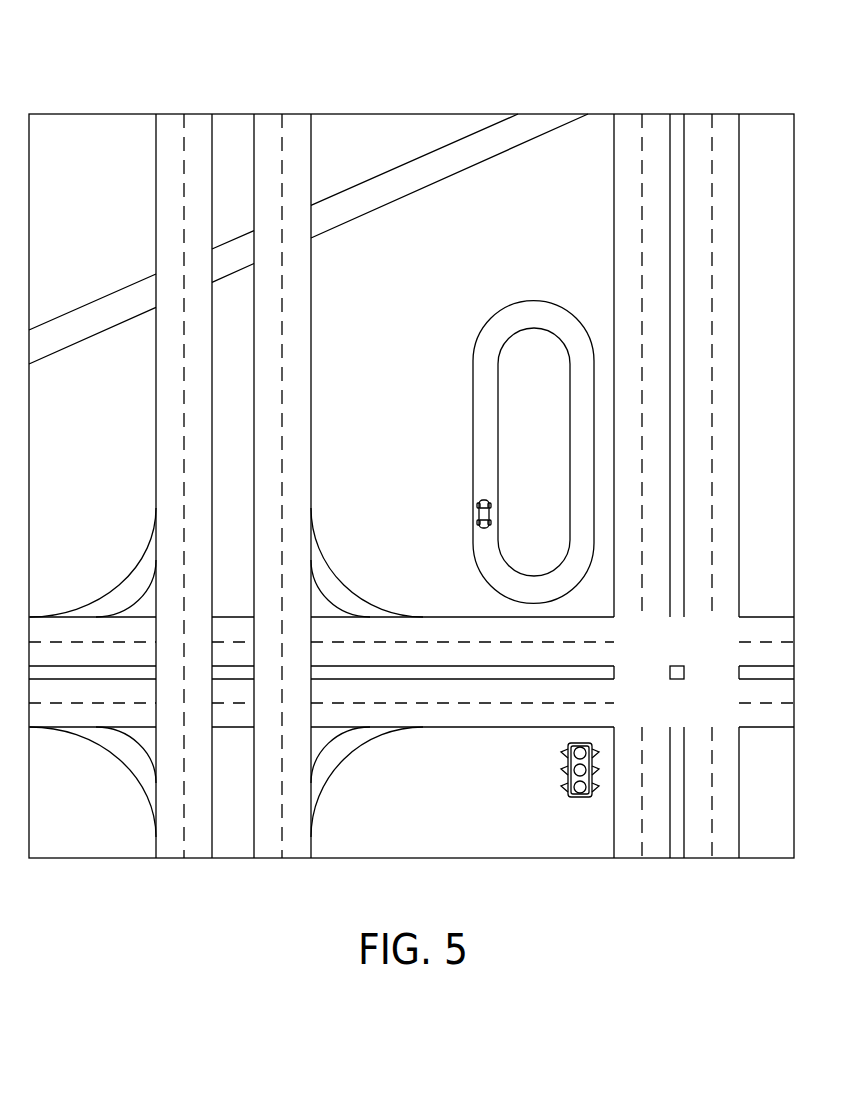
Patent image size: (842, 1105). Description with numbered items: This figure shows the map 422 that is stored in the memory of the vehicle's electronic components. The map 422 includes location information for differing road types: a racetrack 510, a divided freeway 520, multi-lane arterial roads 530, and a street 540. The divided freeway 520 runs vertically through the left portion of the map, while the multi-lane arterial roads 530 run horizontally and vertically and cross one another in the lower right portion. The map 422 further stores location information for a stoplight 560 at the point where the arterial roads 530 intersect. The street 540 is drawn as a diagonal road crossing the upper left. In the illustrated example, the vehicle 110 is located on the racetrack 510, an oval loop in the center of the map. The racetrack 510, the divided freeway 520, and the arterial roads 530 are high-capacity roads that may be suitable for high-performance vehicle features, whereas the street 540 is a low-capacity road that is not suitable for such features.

The map 422 is at (207, 80).
The street 540 is at (87, 303).
The divided freeway 520 is at (298, 331).
The multi-lane arterial roads 530 is at (614, 229).
The racetrack 510 is at (473, 420).
The vehicle 110 is at (478, 510).
The stoplight 560 is at (580, 800).